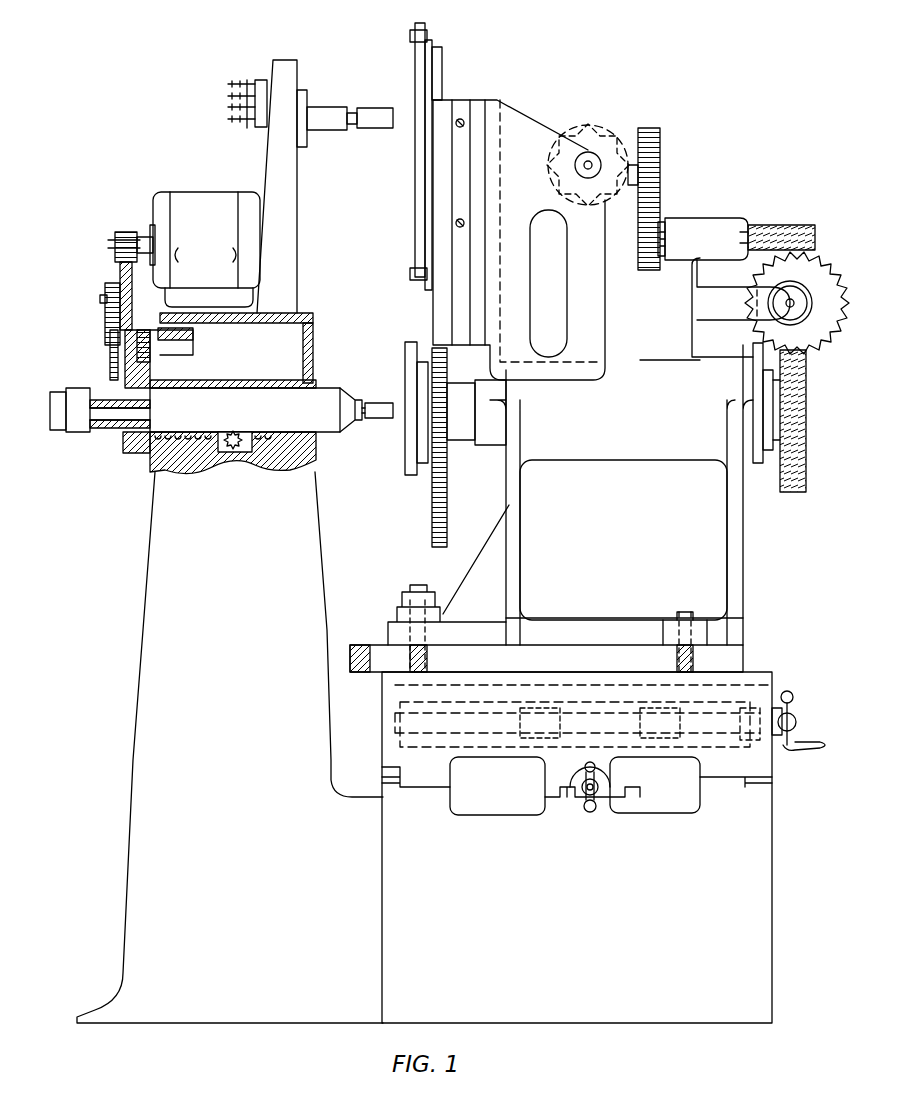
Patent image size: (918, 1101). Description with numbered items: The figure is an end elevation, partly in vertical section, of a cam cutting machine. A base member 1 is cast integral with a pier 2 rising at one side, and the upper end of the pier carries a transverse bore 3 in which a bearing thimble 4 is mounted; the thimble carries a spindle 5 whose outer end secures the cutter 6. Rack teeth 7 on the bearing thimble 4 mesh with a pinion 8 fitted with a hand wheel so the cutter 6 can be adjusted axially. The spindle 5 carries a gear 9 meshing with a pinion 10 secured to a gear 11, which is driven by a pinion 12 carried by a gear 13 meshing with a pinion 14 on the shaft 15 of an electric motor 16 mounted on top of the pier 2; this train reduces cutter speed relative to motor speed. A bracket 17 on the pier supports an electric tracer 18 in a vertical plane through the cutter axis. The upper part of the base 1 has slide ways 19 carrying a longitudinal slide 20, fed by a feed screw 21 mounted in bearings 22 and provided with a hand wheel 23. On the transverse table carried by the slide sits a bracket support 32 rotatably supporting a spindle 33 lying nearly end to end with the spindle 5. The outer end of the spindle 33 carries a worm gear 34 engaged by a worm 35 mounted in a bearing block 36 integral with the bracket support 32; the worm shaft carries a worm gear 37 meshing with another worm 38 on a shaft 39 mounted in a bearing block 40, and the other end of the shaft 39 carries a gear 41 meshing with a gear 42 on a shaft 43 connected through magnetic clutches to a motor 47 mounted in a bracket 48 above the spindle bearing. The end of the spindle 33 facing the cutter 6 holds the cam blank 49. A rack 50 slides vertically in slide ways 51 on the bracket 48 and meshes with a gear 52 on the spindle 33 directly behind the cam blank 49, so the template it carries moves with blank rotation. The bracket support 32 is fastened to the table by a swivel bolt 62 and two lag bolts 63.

The base member 1 is at (772, 895).
The pier 2 is at (150, 705).
The transverse bore 3 is at (163, 452).
The bearing thimble 4 is at (330, 395).
The spindle 5 is at (115, 412).
The cutter 6 is at (385, 405).
The rack teeth 7 is at (190, 415).
The pinion 8 is at (236, 452).
The gear 9 is at (135, 448).
The pinion 10 is at (108, 340).
The gear 11 is at (108, 322).
The pinion 12 is at (110, 287).
The gear 13 is at (120, 270).
The pinion 14 is at (122, 230).
The shaft 15 is at (140, 237).
The electric motor 16 is at (207, 200).
The bracket 17 is at (280, 155).
The electric tracer 18 is at (372, 112).
The slide ways 19 is at (440, 788).
The longitudinal slide 20 is at (495, 752).
The feed screw 21 is at (590, 800).
The bearings 22 is at (650, 805).
The hand wheel 23 is at (597, 810).
The bracket support 32 is at (513, 508).
The spindle 33 is at (775, 440).
The worm gear 34 is at (808, 455).
The worm 35 is at (805, 282).
The bearing block 36 is at (725, 305).
The worm gear 37 is at (830, 275).
The worm 38 is at (800, 232).
The shaft 39 is at (660, 225).
The bearing block 40 is at (720, 223).
The gear 41 is at (650, 255).
The gear 42 is at (655, 137).
The shaft 43 is at (630, 165).
The motor 47 is at (585, 128).
The bracket 48 is at (508, 118).
The cam blank 49 is at (410, 462).
The rack 50 is at (442, 55).
The slide ways 51 is at (452, 105).
The gear 52 is at (425, 443).
The swivel bolt 62 is at (415, 588).
The lag bolts 63 is at (683, 612).